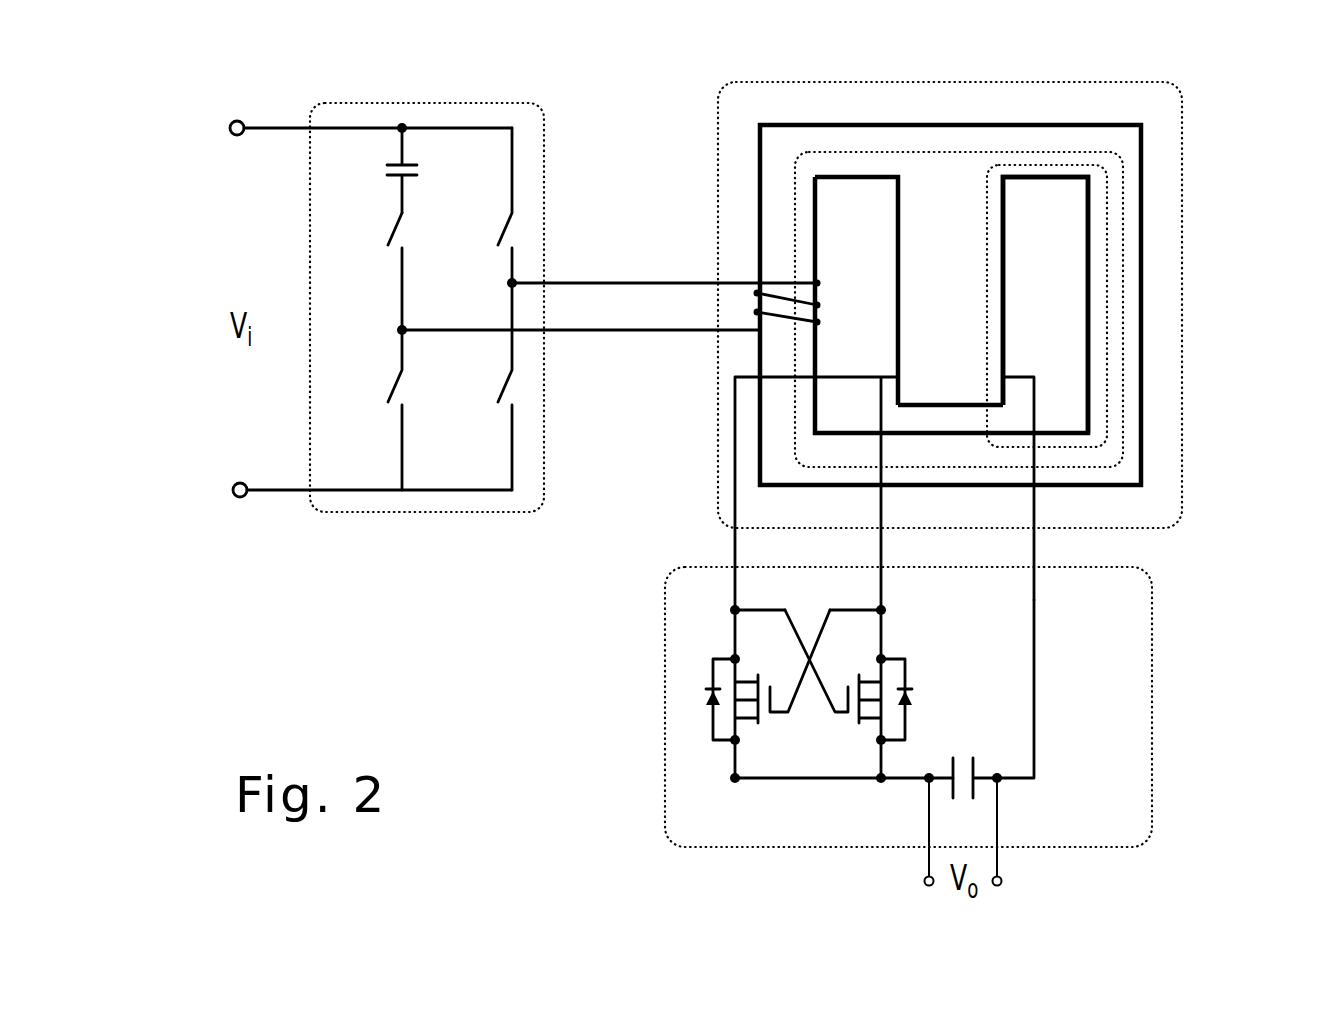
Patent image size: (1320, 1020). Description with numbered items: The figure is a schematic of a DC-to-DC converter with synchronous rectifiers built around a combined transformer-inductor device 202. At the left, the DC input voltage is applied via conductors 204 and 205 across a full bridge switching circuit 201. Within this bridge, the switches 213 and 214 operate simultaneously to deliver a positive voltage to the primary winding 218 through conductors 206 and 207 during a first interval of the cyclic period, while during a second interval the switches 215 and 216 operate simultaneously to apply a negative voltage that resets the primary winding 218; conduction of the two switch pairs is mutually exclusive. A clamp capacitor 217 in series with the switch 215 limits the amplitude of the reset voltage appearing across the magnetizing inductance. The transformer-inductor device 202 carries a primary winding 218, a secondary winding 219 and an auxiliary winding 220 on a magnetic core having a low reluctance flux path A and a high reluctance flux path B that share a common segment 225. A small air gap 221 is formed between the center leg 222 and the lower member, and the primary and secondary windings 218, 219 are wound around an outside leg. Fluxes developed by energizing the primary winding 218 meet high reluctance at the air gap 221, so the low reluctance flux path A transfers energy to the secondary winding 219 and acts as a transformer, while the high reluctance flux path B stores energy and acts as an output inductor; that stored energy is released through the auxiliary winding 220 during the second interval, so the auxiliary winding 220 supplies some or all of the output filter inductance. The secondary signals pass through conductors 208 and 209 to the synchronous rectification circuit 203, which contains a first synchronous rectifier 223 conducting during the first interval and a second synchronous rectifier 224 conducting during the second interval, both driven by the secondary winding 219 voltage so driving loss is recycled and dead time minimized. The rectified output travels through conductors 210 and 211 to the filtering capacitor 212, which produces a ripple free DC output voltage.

The full bridge switching circuit 201 is at (445, 113).
The combined transformer-inductor device 202 is at (1058, 102).
The synchronous rectification circuit 203 is at (1142, 782).
The conductor 204 is at (270, 127).
The conductor 205 is at (278, 492).
The conductor 206 is at (630, 281).
The conductor 207 is at (630, 333).
The conductor 208 is at (881, 578).
The conductor 209 is at (735, 578).
The conductor 210 is at (1037, 713).
The conductor 211 is at (905, 785).
The filtering capacitor 212 is at (972, 757).
The switch 213 is at (483, 229).
The switch 214 is at (374, 407).
The switch 215 is at (371, 270).
The switch 216 is at (480, 410).
The clamp capacitor 217 is at (376, 168).
The primary winding 218 is at (810, 303).
The secondary winding 219 is at (853, 375).
The auxiliary winding 220 is at (1025, 373).
The air gap 221 is at (940, 423).
The center leg 222 is at (963, 270).
The first synchronous rectifier 223 is at (768, 697).
The second synchronous rectifier 224 is at (848, 697).
The common segment 225 is at (1077, 158).
The low reluctance flux path A is at (1123, 233).
The high reluctance flux path B is at (1108, 278).